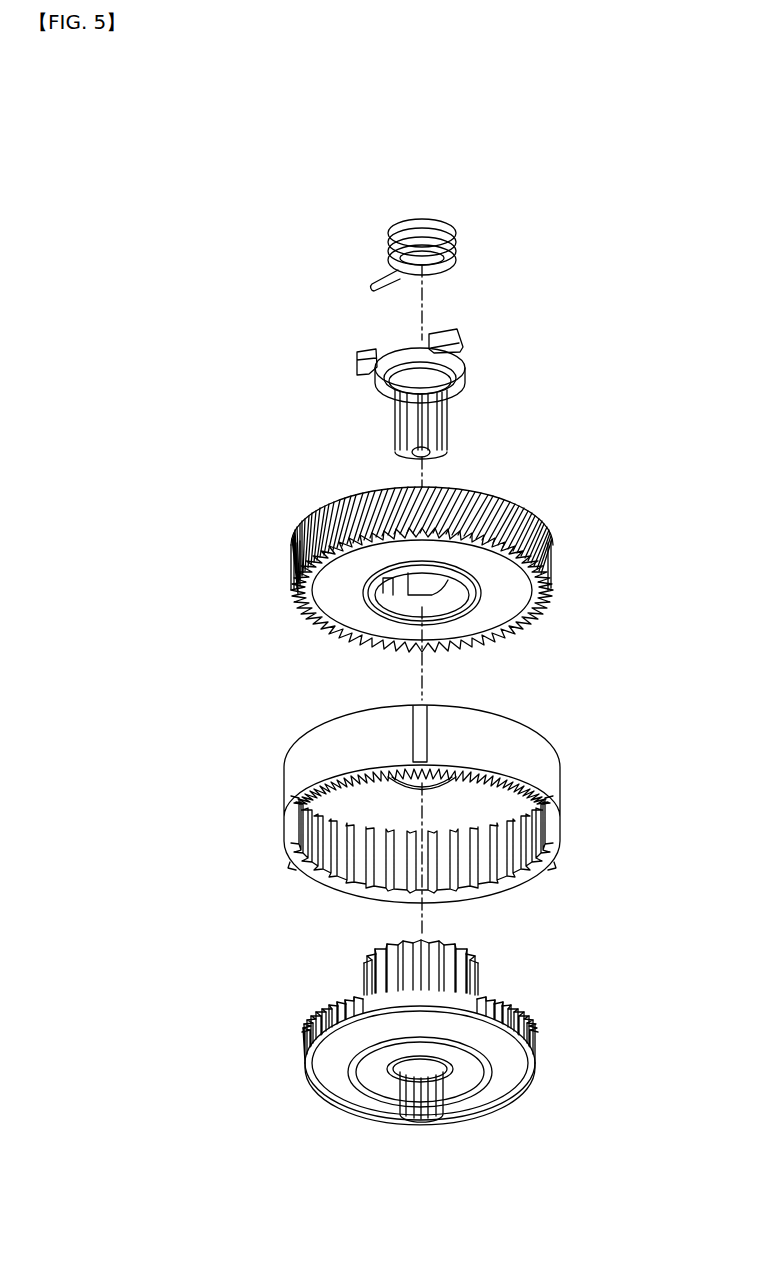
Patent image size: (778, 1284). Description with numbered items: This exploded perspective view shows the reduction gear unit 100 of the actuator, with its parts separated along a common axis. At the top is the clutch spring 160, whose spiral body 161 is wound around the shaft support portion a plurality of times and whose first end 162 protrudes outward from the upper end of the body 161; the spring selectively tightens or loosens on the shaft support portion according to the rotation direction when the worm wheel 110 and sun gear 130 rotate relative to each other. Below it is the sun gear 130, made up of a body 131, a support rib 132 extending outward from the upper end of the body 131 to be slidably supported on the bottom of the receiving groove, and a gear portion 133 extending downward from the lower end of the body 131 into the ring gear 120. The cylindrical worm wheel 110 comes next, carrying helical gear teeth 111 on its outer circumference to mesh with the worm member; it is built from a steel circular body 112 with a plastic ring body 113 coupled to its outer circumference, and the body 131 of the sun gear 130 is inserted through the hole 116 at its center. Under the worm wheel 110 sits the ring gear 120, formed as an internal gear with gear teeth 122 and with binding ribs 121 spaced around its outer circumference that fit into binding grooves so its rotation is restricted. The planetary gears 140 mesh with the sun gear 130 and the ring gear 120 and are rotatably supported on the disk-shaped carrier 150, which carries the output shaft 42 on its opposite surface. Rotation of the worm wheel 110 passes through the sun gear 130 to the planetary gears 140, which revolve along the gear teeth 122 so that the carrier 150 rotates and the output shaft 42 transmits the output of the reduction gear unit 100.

The reduction gear unit 100 is at (448, 111).
The worm wheel 110 is at (267, 553).
The helical gear teeth 111 is at (532, 519).
The circular body 112 is at (535, 625).
The ring body 113 is at (552, 597).
The hole 116 is at (434, 606).
The ring gear 120 is at (266, 797).
The binding ribs 121 is at (425, 704).
The gear teeth 122 is at (495, 878).
The sun gear 130 is at (344, 363).
The body 131 is at (465, 370).
The support rib 132 is at (455, 337).
The gear portion 133 is at (445, 426).
The planetary gears 140 is at (351, 967).
The carrier 150 is at (306, 1095).
The clutch spring 160 is at (372, 221).
The body 161 is at (458, 250).
The first end 162 is at (367, 289).
The output shaft 42 is at (450, 1108).